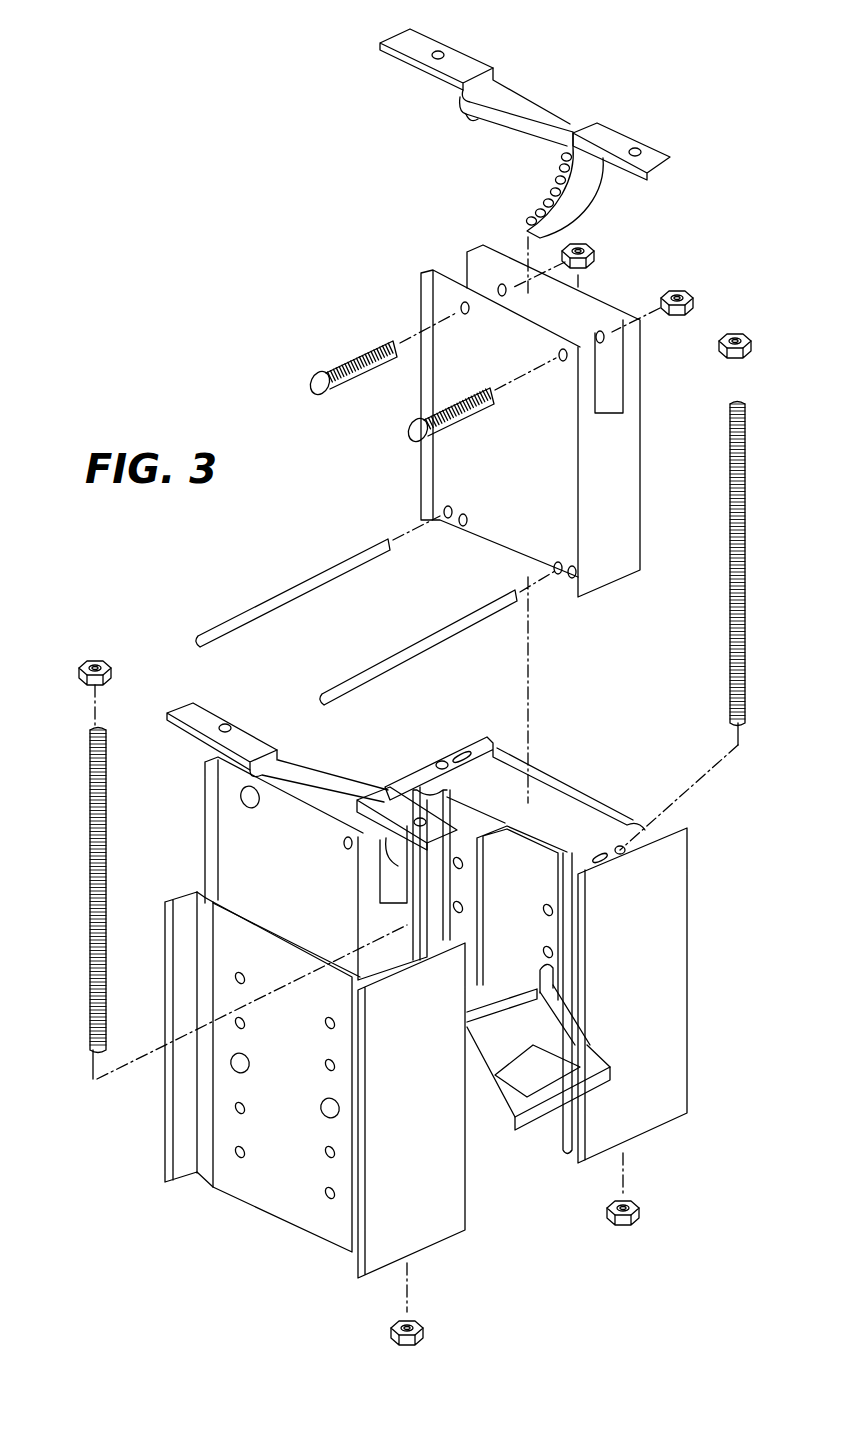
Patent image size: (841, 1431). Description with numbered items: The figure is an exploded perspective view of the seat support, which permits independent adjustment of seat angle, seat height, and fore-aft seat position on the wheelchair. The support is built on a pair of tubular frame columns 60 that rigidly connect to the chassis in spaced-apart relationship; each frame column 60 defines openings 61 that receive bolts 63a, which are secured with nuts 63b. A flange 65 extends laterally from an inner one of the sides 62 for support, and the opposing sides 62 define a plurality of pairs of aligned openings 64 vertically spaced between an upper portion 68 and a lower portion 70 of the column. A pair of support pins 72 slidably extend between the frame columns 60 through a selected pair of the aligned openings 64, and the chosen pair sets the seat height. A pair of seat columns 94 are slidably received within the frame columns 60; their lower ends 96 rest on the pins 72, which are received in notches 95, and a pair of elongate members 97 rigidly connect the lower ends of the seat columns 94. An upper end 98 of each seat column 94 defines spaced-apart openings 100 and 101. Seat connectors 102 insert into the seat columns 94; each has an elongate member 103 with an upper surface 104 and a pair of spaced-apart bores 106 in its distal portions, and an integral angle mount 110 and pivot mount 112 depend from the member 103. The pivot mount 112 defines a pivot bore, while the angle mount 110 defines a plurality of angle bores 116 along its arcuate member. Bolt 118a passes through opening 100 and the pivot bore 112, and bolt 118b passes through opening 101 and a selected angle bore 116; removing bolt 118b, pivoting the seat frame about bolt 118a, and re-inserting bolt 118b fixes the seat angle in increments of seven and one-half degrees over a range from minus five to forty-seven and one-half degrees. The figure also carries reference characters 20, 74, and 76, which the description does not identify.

The mounting assembly 20 is at (441, 1019).
The frame columns 60 is at (678, 1110).
The openings 61 is at (625, 858).
The sides 62 is at (268, 963).
The bolts 63a is at (745, 545).
The nuts 63b is at (740, 358).
The aligned openings 64 is at (458, 855).
The flange 65 is at (490, 925).
The upper portion 68 is at (190, 925).
The lower portion 70 is at (197, 1190).
The support pins 72 is at (235, 1072).
The bracket 74 is at (510, 1115).
The lip 76 is at (552, 1125).
The seat columns 94 is at (397, 607).
The notches 95 is at (460, 528).
The lower ends 96 is at (505, 555).
The elongate members 97 is at (278, 600).
The upper end 98 is at (592, 312).
The opening 100 is at (495, 285).
The opening 101 is at (562, 362).
The seat connectors 102 is at (457, 434).
The elongate member 103 is at (660, 170).
The upper surface 104 is at (562, 125).
The bores 106 is at (445, 52).
The angle mount 110 is at (590, 192).
The pivot mount 112 is at (463, 118).
The angle bores 116 is at (556, 196).
The bolt 118a is at (362, 363).
The bolt 118b is at (455, 410).